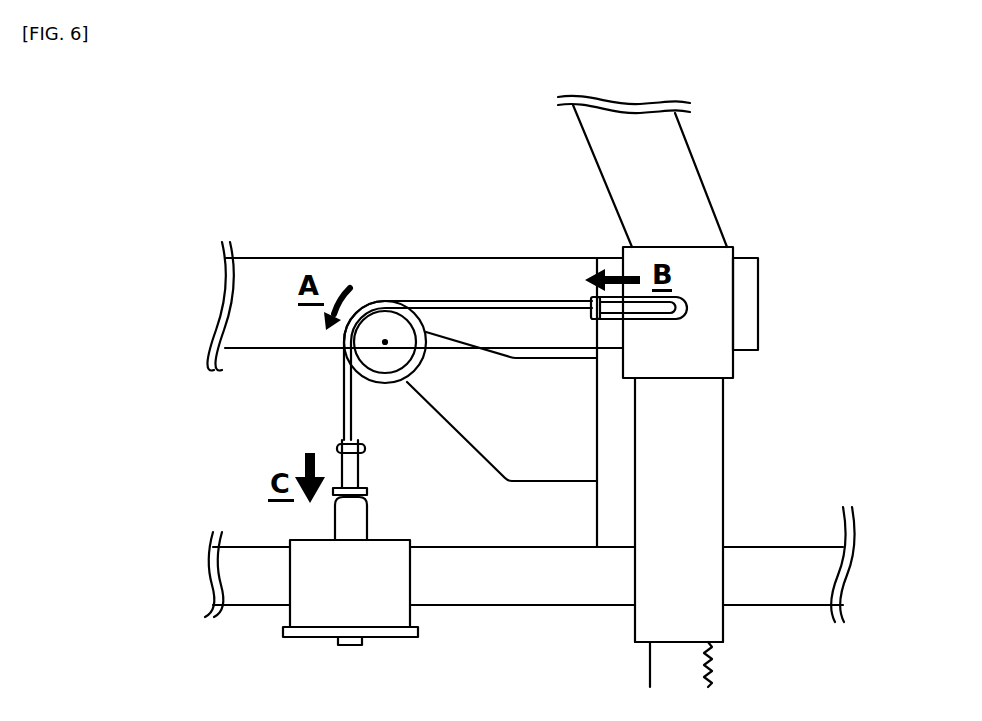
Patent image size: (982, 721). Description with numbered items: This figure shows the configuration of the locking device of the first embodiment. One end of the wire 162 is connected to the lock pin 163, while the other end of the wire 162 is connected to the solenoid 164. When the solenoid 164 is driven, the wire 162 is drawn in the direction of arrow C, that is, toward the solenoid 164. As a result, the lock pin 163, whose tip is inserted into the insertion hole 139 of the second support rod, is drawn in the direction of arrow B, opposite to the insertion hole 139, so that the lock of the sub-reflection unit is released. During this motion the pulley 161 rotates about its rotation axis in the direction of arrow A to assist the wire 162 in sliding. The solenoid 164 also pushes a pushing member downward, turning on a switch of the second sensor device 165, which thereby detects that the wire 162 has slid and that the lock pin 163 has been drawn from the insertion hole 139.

The insertion hole 139 is at (687, 307).
The pulley 161 is at (387, 297).
The wire 162 is at (483, 301).
The lock pin 163 is at (607, 320).
The solenoid 164 is at (287, 618).
The second sensor device 165 is at (368, 497).